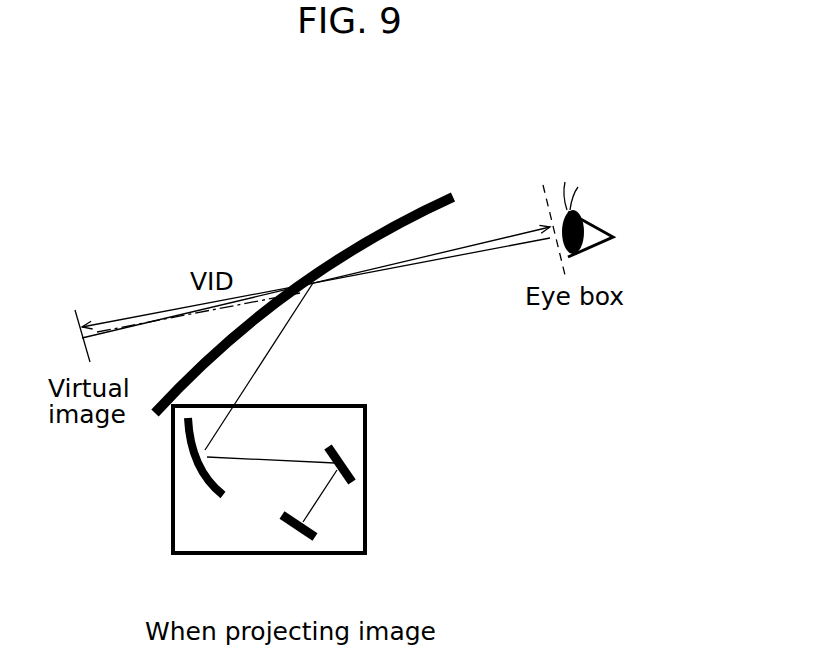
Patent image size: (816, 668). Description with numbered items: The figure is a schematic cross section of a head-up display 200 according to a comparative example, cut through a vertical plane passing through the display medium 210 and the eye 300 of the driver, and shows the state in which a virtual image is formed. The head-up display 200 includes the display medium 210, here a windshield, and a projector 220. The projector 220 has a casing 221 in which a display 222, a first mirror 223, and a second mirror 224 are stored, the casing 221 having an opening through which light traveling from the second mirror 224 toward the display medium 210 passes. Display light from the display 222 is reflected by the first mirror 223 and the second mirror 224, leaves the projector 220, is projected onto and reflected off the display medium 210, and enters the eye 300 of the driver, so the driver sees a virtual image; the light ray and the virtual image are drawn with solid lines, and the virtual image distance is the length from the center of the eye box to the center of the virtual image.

The head-up display 200 is at (540, 150).
The display medium 210 is at (408, 214).
The projector 220 is at (393, 365).
The casing 221 is at (303, 404).
The display 222 is at (285, 530).
The first mirror 223 is at (338, 450).
The second mirror 224 is at (190, 450).
The eye 300 is at (585, 213).